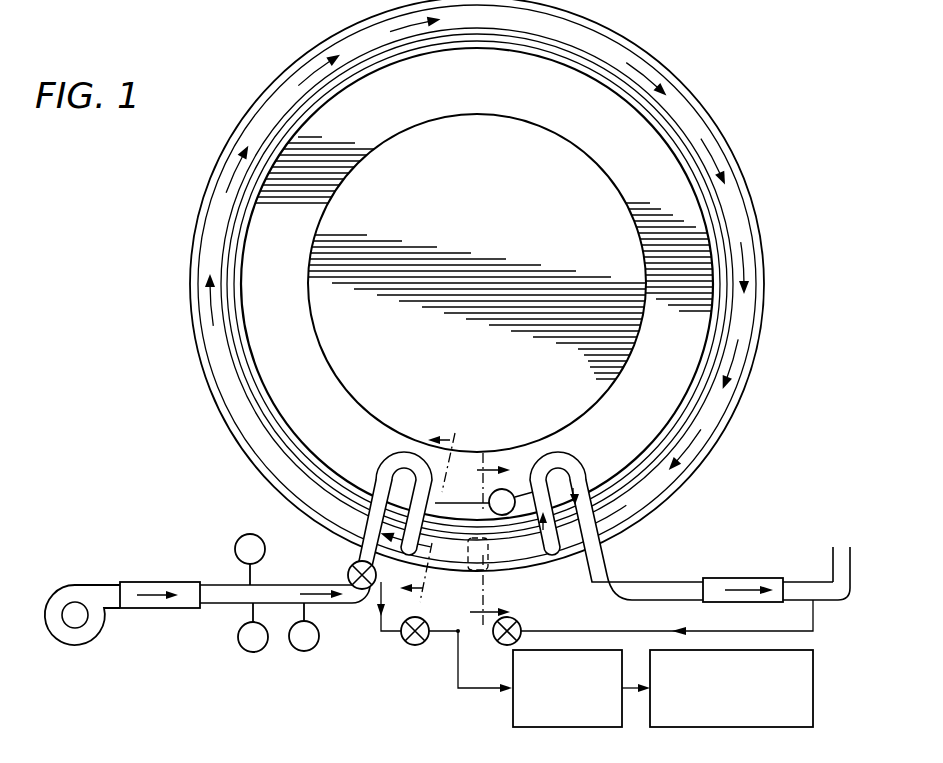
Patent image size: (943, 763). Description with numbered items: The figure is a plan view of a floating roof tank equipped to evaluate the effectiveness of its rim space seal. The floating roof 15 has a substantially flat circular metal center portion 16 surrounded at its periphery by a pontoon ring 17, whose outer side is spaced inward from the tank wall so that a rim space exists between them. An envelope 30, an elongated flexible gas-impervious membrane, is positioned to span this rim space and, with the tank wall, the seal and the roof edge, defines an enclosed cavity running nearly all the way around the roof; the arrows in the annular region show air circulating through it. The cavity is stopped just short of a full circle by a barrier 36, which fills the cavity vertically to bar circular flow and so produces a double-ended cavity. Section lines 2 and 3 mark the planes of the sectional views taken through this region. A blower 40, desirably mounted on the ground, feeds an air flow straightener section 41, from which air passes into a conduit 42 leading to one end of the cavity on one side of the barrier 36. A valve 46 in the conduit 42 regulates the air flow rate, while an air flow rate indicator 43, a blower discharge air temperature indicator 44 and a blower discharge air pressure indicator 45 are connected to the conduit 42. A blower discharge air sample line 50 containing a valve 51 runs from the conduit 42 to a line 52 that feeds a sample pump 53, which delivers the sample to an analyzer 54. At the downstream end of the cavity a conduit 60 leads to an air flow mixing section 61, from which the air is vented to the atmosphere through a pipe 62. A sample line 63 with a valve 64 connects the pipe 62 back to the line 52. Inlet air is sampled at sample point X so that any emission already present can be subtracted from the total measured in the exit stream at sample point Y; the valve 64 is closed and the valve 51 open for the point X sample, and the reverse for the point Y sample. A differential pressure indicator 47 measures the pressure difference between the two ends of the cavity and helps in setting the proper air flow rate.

The section line 2- 2 is at (435, 520).
The section line 3- 3 is at (480, 539).
The floating roof 15 is at (640, 155).
The center portion 16 is at (511, 209).
The pontoon ring 17 is at (476, 96).
The envelope 30 is at (210, 232).
The barrier 36 is at (483, 555).
The blower 40 is at (60, 588).
The air flow straightener section 41 is at (156, 582).
The conduit 42 is at (375, 486).
The air flow rate indicator 43 is at (237, 550).
The blower discharge air temperature indicator 44 is at (243, 652).
The blower discharge air pressure indicator 45 is at (294, 649).
The valve 46 is at (349, 569).
The differential pressure indicator 47 is at (502, 489).
The blower discharge air sample line 50 is at (379, 627).
The valve 51 is at (413, 645).
The line 52 is at (457, 673).
The sample pump 53 is at (512, 703).
The analyzer 54 is at (813, 665).
The conduit 60 is at (628, 582).
The air flow mixing section 61 is at (735, 578).
The pipe 62 is at (852, 565).
The sample line 63 is at (477, 637).
The valve 64 is at (523, 625).
The sample point X is at (352, 556).
The sample point Y is at (826, 608).